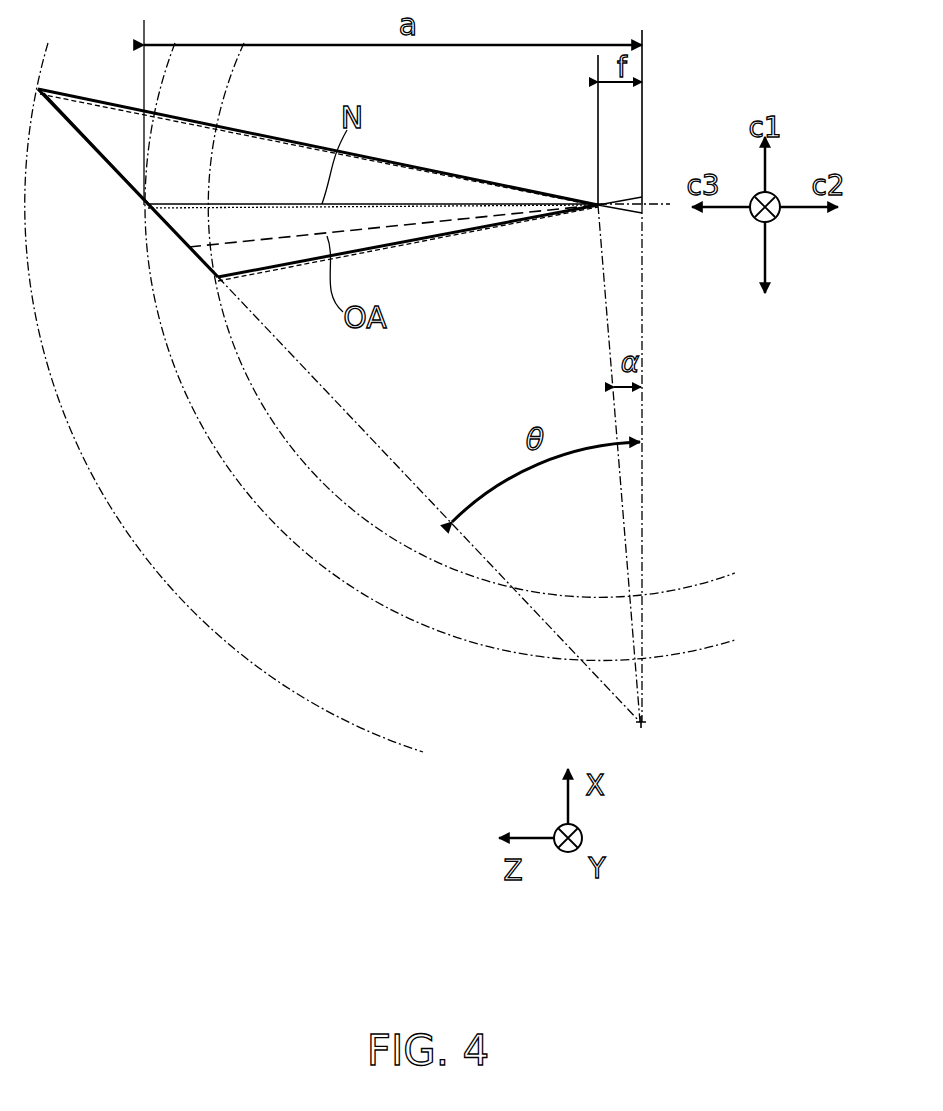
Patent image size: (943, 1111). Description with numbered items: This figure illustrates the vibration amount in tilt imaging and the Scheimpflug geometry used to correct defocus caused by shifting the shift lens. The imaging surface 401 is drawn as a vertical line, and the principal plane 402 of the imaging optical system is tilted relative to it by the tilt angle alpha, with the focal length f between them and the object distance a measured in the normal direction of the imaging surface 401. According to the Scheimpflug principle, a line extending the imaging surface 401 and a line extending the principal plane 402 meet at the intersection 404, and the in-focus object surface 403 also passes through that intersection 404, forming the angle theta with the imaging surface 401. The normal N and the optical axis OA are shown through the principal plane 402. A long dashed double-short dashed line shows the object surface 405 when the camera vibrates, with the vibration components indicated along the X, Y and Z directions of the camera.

The imaging surface 401 is at (643, 196).
The principal plane 402 is at (594, 197).
The in-focus object surface 403 is at (110, 167).
The intersection 404 is at (640, 722).
The object surface 405 is at (167, 227).